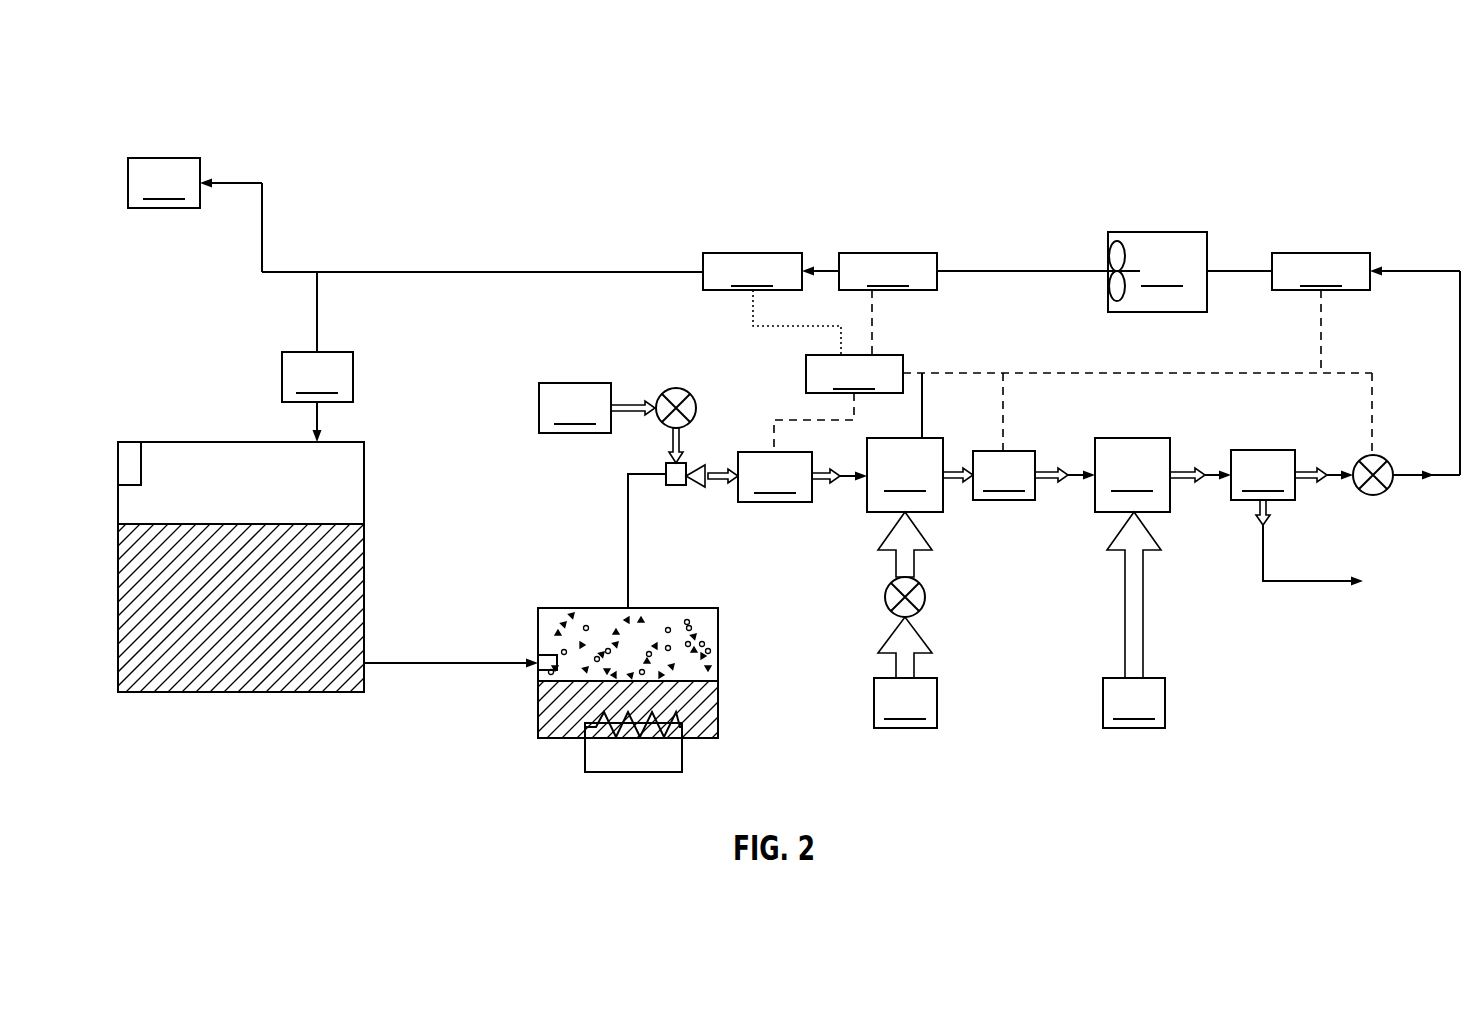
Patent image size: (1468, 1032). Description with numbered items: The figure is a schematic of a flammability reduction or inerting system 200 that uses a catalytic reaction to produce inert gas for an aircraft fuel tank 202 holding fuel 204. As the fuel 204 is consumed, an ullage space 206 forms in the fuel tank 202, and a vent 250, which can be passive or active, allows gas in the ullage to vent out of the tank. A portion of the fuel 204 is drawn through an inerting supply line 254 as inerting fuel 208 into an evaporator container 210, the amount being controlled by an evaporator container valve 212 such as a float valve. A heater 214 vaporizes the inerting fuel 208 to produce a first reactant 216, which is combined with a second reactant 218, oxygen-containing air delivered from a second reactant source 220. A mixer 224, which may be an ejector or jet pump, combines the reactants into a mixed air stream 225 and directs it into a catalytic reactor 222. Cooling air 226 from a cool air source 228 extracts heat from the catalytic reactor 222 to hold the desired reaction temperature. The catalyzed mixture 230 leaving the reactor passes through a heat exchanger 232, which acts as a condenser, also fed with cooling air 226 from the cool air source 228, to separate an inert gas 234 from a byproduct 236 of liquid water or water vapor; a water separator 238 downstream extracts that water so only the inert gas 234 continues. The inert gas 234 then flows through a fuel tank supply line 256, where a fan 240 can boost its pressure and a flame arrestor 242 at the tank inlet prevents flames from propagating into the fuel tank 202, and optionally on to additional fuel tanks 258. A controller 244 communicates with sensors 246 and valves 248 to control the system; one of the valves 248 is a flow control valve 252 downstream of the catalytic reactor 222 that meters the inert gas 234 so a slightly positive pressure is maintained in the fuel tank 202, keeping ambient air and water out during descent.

The inerting system 200 is at (280, 122).
The fuel tank 202 is at (240, 442).
The fuel 204 is at (232, 667).
The ullage space 206 is at (340, 497).
The inerting fuel 208 is at (702, 717).
The evaporator container 210 is at (590, 608).
The evaporator container valve 212 is at (535, 667).
The heater 214 is at (670, 753).
The first reactant 216 is at (700, 645).
The second reactant 218 is at (635, 402).
The second reactant source 220 is at (575, 408).
The catalytic reactor 222 is at (905, 475).
The mixer 224 is at (677, 487).
The mixed air stream 225 is at (822, 482).
The cooling air 226 is at (915, 565).
The cool air source 228 is at (1019, 703).
The catalyzed mixture 230 is at (952, 465).
The heat exchanger 232 is at (1163, 475).
The inert gas 234 is at (1314, 468).
The byproduct 236 is at (1253, 508).
The water separator 238 is at (1263, 475).
The fan 240 is at (1157, 272).
The flame arrestor 242 is at (317, 357).
The controller 244 is at (1062, 372).
The sensors 246 is at (1036, 377).
The valves 248 is at (675, 386).
The vent 250 is at (127, 442).
The flow control valve 252 is at (1375, 500).
The inerting supply line 254 is at (438, 667).
The fuel tank supply line 256 is at (483, 270).
The additional fuel tanks 258 is at (195, 215).